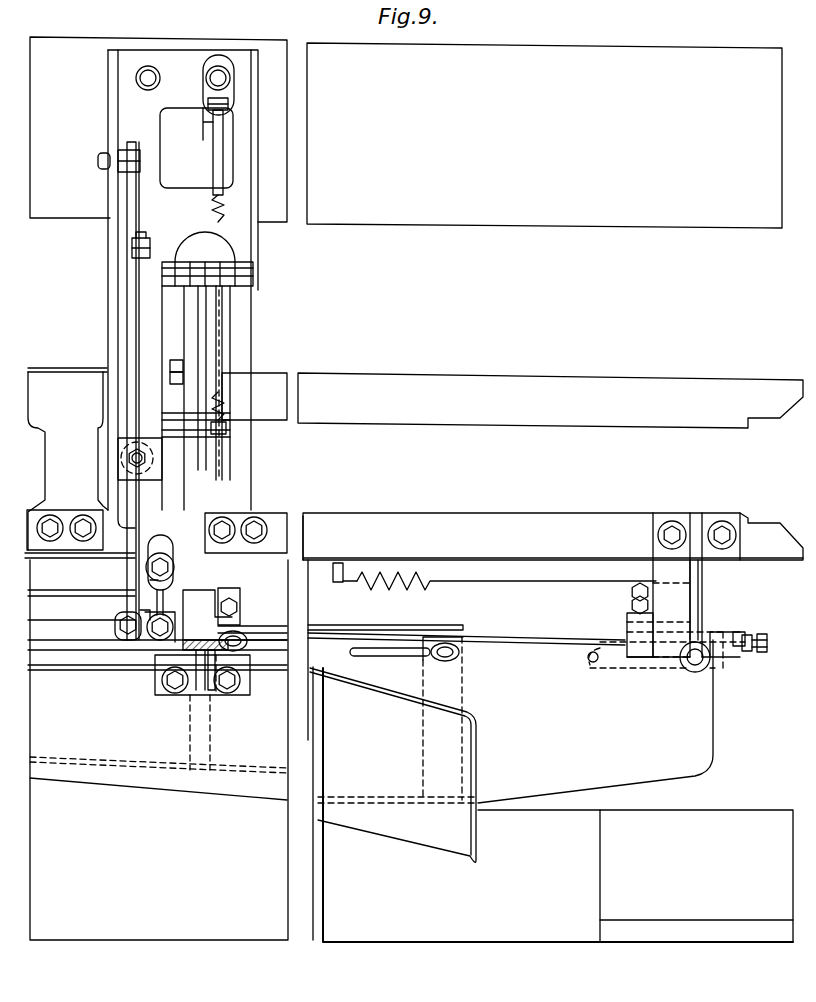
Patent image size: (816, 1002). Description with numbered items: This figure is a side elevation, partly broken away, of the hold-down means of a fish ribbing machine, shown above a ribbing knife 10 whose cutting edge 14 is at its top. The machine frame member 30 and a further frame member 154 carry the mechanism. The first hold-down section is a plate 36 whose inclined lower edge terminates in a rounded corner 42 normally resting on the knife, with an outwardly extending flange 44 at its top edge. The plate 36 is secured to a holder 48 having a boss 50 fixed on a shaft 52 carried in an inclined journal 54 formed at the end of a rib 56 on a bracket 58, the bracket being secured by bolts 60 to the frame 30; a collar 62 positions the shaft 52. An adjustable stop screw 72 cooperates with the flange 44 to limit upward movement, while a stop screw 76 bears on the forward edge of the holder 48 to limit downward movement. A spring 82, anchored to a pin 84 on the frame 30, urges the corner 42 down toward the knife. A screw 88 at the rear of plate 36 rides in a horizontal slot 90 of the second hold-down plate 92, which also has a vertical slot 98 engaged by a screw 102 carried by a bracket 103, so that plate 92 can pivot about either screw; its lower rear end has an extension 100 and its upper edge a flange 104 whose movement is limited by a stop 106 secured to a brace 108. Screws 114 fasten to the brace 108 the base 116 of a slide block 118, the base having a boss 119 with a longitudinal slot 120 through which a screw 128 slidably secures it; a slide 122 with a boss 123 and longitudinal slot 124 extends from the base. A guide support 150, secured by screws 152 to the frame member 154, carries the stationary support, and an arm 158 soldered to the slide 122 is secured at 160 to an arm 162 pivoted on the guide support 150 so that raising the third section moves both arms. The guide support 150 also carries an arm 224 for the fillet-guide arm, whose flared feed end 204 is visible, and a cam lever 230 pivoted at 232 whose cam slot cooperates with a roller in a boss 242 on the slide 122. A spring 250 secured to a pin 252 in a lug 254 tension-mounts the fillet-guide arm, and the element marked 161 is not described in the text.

The ribbing knife 10 is at (462, 920).
The cutting edge 14 is at (590, 812).
The frame member 30 is at (535, 388).
The hold-down member plate 36 is at (595, 721).
The rounded corner 42 is at (430, 800).
The flange 44 is at (548, 642).
The holder 48 is at (645, 666).
The boss 50 is at (712, 626).
The shaft 52 is at (694, 666).
The inclined journal 54 is at (745, 635).
The rib 56 is at (700, 572).
The bracket 58 is at (742, 592).
The bolt 60 is at (670, 528).
The collar 62 is at (712, 668).
The adjustable stop screw 72 is at (630, 590).
The stop screw 76 is at (763, 651).
The spring 82 is at (527, 582).
The pin 84 is at (338, 584).
The screw 88 is at (455, 660).
The horizontal slot 90 is at (352, 656).
The second hold-down plate 92 is at (355, 650).
The vertical slot 98 is at (248, 641).
The extension 100 is at (212, 770).
The screw 102 is at (236, 660).
The bracket 103 is at (262, 583).
The flange 104 is at (385, 617).
The stop 106 is at (240, 608).
The brace 108 is at (42, 592).
The screw 114 is at (128, 636).
The base 116 is at (177, 633).
The slide block 118 is at (155, 598).
The boss 119 is at (152, 638).
The longitudinal slot 120 is at (162, 640).
The slide 122 is at (150, 612).
The boss 123 is at (150, 578).
The longitudinal slot 124 is at (172, 572).
The screw 128 is at (168, 652).
The guide support 150 is at (108, 338).
The screw 152 is at (206, 78).
The frame member 154 is at (573, 48).
The arm 158 is at (135, 300).
The connection 160 is at (118, 253).
The bolt 161 is at (98, 160).
The arm 162 is at (131, 210).
The flared feed end 204 is at (438, 840).
The arm 224 is at (188, 262).
The cam lever 230 is at (165, 470).
The pivot 232 is at (186, 372).
The boss 242 is at (226, 428).
The spring 250 is at (202, 208).
The pin 252 is at (213, 155).
The lug 254 is at (203, 132).